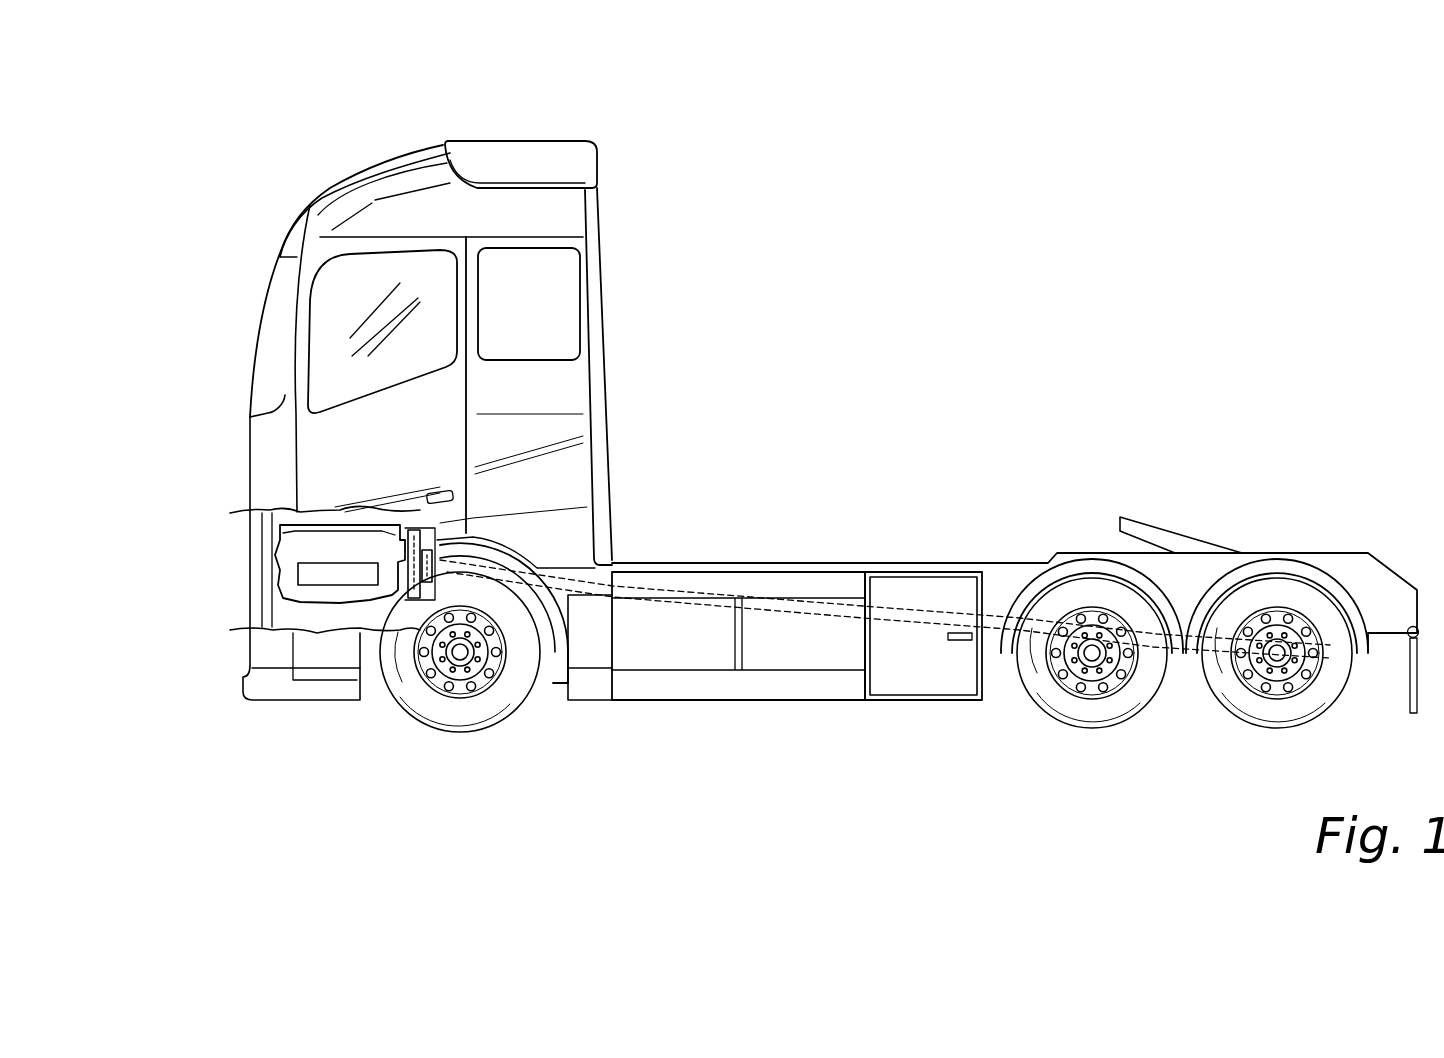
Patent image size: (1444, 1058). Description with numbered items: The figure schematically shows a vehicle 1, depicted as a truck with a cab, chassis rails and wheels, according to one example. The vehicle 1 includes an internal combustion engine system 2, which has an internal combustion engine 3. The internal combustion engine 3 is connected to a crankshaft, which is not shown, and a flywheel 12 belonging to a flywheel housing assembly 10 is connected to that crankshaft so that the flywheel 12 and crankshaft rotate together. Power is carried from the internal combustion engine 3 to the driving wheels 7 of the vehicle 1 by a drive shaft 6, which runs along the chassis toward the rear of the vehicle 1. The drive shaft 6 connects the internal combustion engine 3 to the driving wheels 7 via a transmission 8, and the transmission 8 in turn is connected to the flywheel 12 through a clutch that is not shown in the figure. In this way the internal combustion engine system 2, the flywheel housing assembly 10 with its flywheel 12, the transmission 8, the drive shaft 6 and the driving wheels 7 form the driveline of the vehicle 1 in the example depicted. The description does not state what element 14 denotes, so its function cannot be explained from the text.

The vehicle 1 is at (829, 195).
The internal combustion engine system 2 is at (236, 545).
The internal combustion engine 3 is at (325, 578).
The drive shaft 6 is at (918, 620).
The driving wheels 7 is at (1254, 676).
The transmission 8 is at (430, 583).
The flywheel housing assembly 10 is at (417, 530).
The flywheel 12 is at (445, 503).
The cover 14 is at (407, 592).